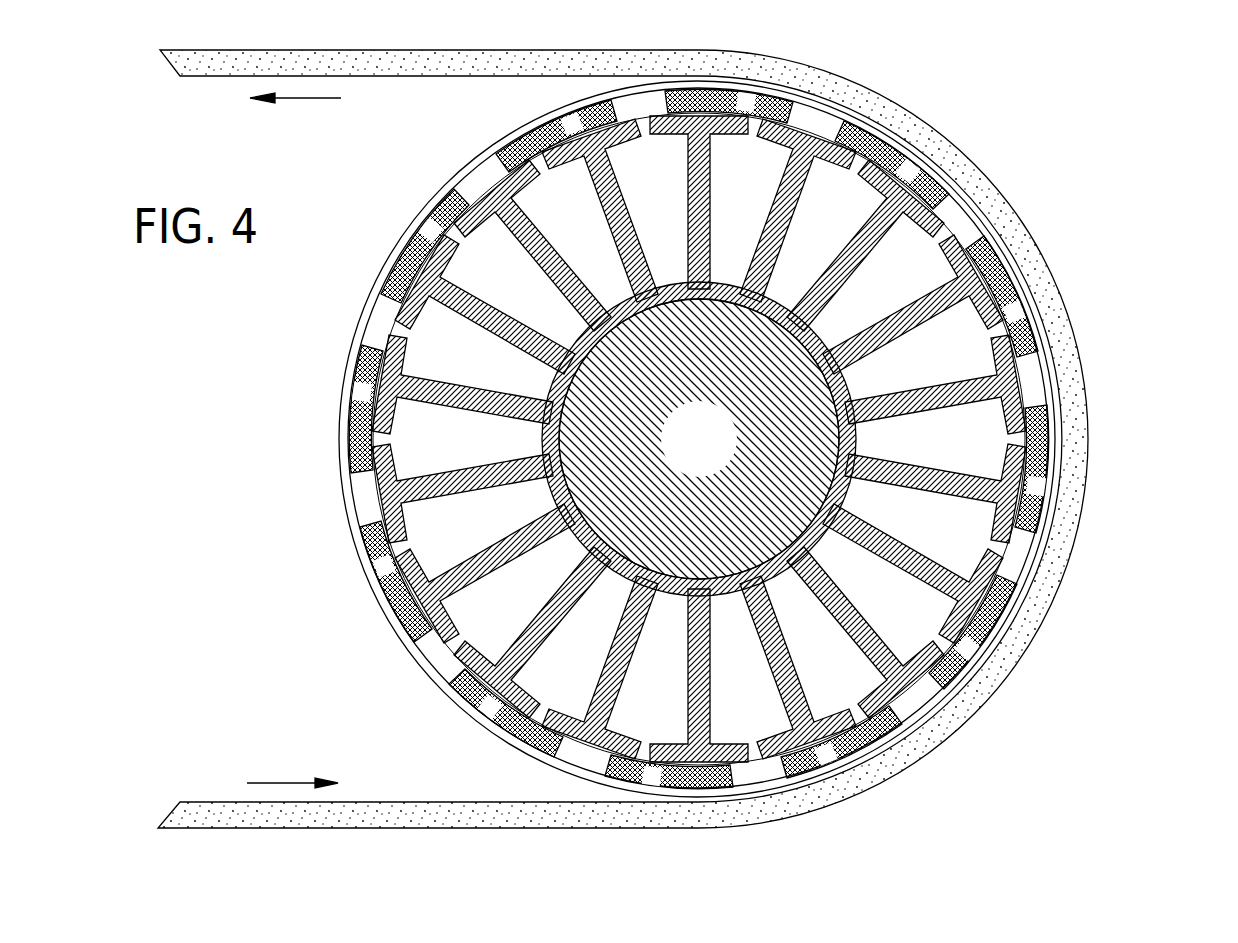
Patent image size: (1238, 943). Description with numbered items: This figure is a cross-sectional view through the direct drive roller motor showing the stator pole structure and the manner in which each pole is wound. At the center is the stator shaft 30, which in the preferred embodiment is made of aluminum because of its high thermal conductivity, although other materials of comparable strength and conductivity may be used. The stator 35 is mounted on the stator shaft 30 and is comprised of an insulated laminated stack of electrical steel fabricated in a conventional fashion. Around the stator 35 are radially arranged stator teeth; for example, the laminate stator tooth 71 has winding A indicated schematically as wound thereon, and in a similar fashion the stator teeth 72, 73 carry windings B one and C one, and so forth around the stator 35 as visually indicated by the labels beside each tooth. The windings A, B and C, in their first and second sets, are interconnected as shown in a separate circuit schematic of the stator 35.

The stator shaft 30 is at (683, 454).
The stator 35 is at (1125, 439).
The laminate stator tooth 71 is at (416, 268).
The stator tooth 72 is at (505, 172).
The stator tooth 73 is at (610, 147).